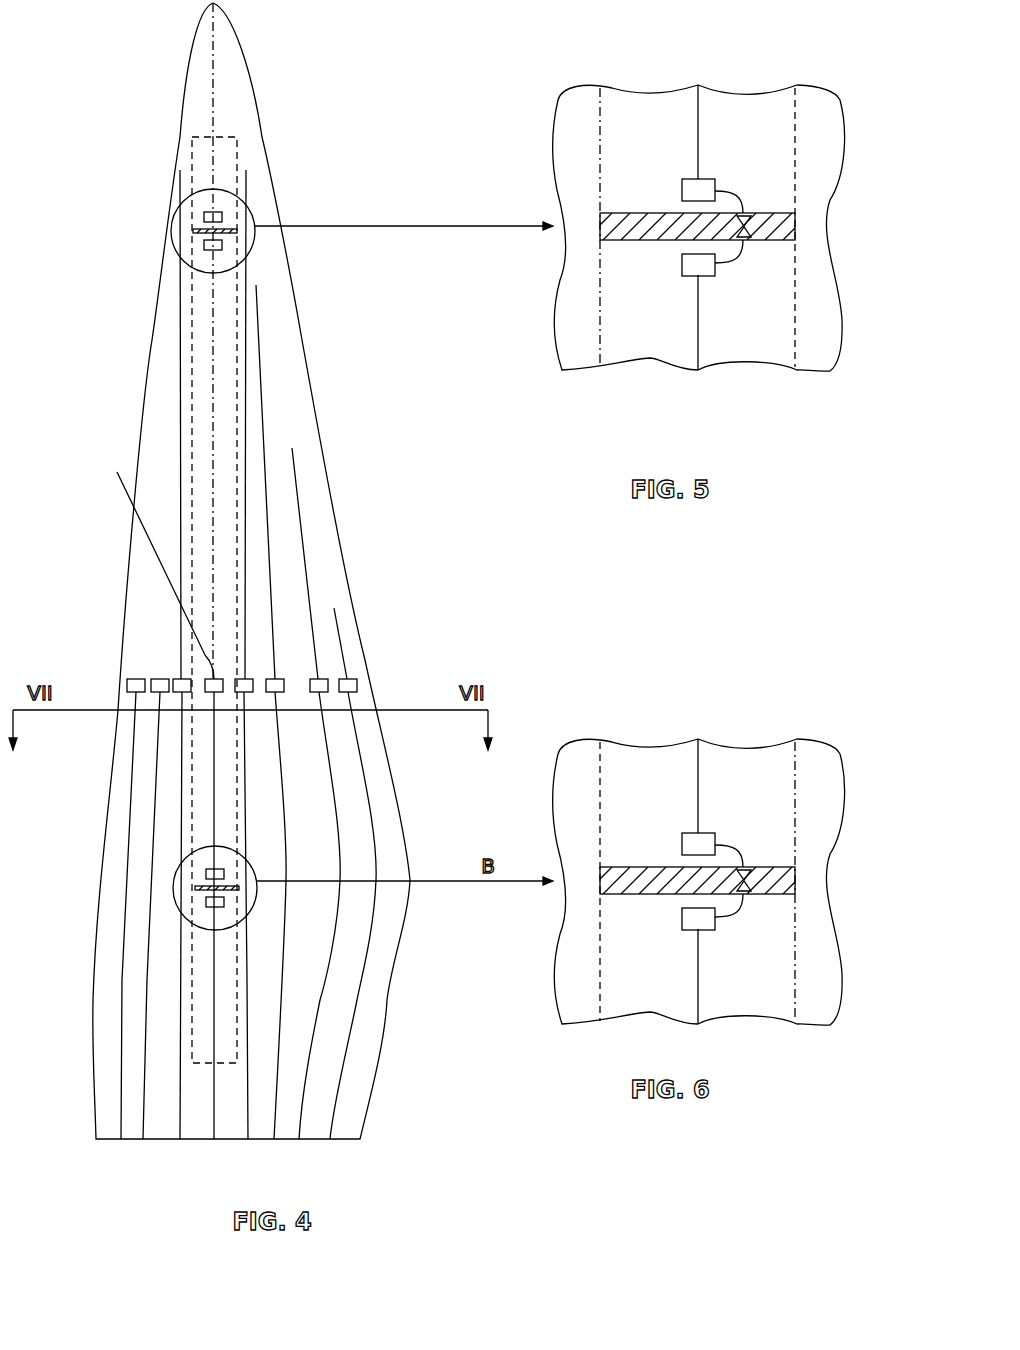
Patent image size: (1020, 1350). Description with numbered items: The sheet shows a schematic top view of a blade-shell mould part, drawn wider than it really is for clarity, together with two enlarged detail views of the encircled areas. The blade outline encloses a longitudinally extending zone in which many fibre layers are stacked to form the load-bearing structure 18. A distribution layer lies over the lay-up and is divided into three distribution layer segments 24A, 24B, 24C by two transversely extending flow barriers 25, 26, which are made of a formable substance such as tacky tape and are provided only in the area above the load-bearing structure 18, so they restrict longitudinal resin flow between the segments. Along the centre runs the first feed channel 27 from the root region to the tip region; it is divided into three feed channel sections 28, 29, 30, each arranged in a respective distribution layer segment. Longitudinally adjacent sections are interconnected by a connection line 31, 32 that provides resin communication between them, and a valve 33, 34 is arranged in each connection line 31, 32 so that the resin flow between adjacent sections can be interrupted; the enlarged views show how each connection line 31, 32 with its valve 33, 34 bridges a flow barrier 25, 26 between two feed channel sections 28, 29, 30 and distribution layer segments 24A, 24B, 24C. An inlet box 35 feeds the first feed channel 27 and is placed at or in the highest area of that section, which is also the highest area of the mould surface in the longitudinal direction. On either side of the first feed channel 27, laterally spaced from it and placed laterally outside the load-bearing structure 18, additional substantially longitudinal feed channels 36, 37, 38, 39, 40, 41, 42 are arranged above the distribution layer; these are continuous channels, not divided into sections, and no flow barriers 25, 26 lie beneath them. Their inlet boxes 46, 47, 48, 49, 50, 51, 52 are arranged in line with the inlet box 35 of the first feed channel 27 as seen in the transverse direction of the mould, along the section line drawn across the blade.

In FIG. 4, the load-bearing structure 18 is at (225, 1008).
In FIG. 6, the distribution layer segment 24A is at (846, 884).
In FIG. 5, the distribution layer segment 24B is at (782, 328).
In FIG. 6, the distribution layer segment 24B is at (731, 875).
In FIG. 5, the distribution layer segment 24C is at (782, 123).
In FIG. 4, the flow barrier 25 is at (200, 882).
In FIG. 6, the flow barrier 25 is at (739, 865).
In FIG. 4, the flow barrier 26 is at (190, 250).
In FIG. 5, the flow barrier 26 is at (785, 230).
In FIG. 4, the first feed channel 27 is at (214, 1118).
In FIG. 4, the feed channel section 28 is at (215, 1018).
In FIG. 6, the feed channel section 28 is at (763, 1005).
In FIG. 4, the feed channel section 29 is at (213, 441).
In FIG. 5, the feed channel section 29 is at (698, 342).
In FIG. 6, the feed channel section 29 is at (757, 766).
In FIG. 4, the feed channel section 30 is at (213, 47).
In FIG. 5, the feed channel section 30 is at (698, 115).
In FIG. 6, the connection line 31 is at (788, 828).
In FIG. 5, the connection line 32 is at (745, 197).
In FIG. 6, the valve 33 is at (784, 915).
In FIG. 5, the valve 34 is at (750, 232).
In FIG. 4, the inlet box 35 is at (161, 565).
In FIG. 4, the additional feed channel 36 is at (131, 740).
In FIG. 4, the additional feed channel 37 is at (151, 780).
In FIG. 4, the additional feed channel 38 is at (182, 960).
In FIG. 4, the additional feed channel 39 is at (246, 276).
In FIG. 4, the additional feed channel 40 is at (263, 355).
In FIG. 4, the additional feed channel 41 is at (298, 492).
In FIG. 4, the additional feed channel 42 is at (368, 828).
In FIG. 4, the inlet box 46 is at (136, 679).
In FIG. 4, the inlet box 47 is at (160, 679).
In FIG. 4, the inlet box 48 is at (182, 679).
In FIG. 4, the inlet box 49 is at (244, 679).
In FIG. 4, the inlet box 50 is at (275, 679).
In FIG. 4, the inlet box 51 is at (319, 679).
In FIG. 4, the inlet box 52 is at (348, 679).